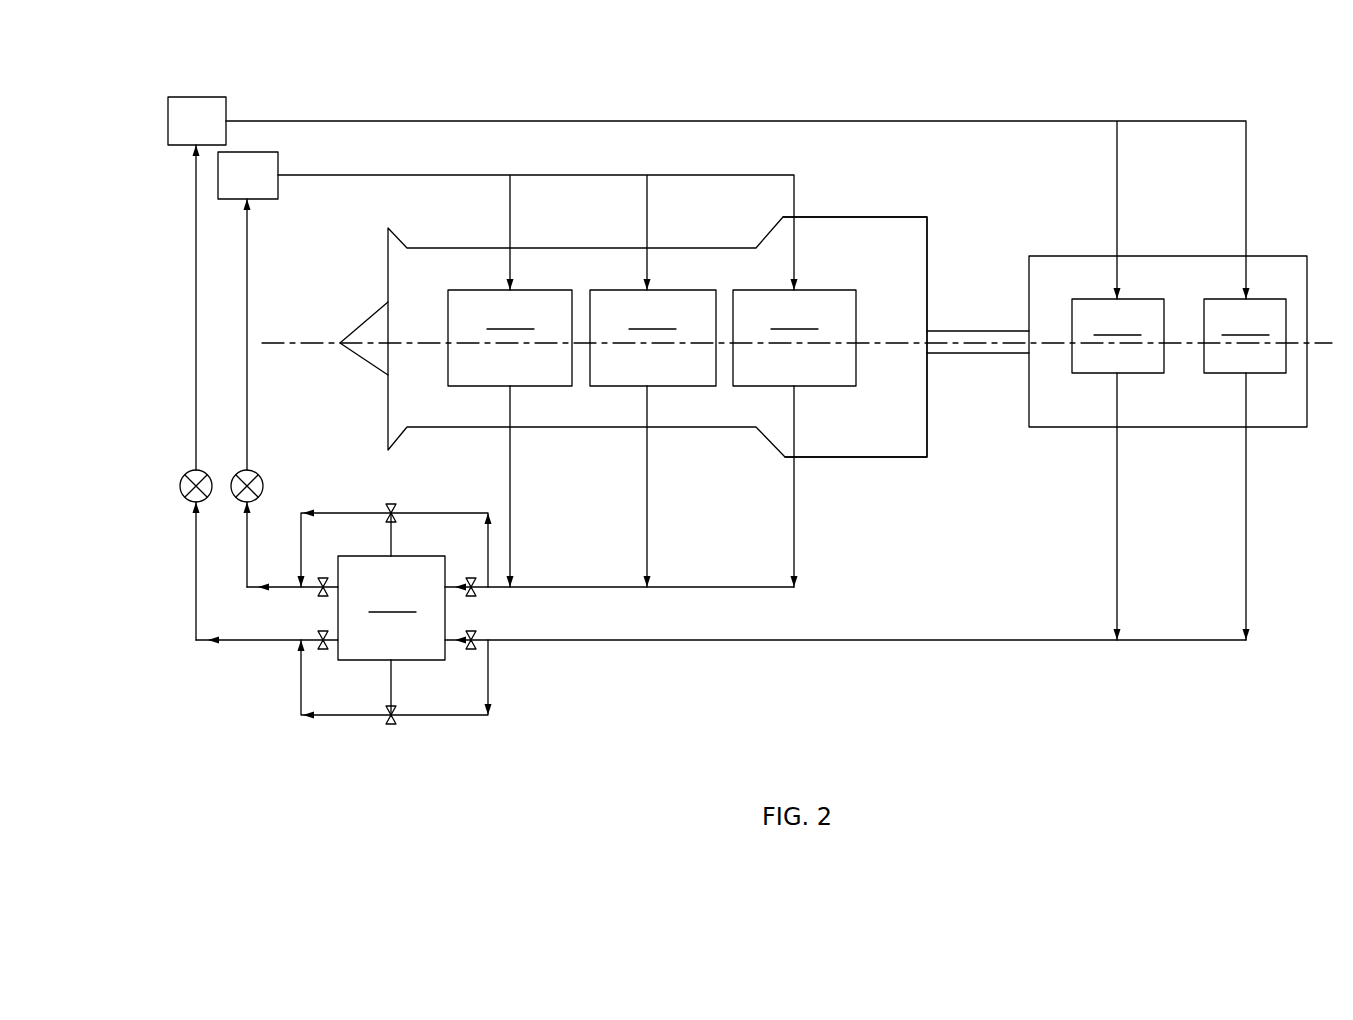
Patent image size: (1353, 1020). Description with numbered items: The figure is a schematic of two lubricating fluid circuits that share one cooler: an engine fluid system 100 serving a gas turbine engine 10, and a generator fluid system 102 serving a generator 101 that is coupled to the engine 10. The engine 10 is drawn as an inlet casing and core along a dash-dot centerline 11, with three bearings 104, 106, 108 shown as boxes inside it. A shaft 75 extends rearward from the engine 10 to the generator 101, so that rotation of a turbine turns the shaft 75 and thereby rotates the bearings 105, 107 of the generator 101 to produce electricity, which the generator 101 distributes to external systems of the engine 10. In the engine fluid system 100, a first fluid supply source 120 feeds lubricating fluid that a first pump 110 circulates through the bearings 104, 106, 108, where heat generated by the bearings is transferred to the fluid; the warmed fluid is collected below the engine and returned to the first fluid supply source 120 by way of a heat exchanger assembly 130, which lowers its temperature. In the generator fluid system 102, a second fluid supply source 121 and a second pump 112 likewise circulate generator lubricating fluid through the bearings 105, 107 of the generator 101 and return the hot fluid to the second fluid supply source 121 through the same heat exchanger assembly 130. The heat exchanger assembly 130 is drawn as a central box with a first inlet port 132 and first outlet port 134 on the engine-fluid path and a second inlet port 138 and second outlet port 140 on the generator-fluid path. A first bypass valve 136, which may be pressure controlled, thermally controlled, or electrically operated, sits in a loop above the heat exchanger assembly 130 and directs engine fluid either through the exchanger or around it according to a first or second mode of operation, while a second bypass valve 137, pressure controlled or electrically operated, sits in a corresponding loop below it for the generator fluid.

The gas turbine engine 10 is at (865, 200).
The centerline axis 11 is at (318, 343).
The shaft 75 is at (946, 338).
The engine fluid system 100 is at (846, 470).
The generator 101 is at (1149, 249).
The generator fluid system 102 is at (1264, 450).
The bearing 104 is at (510, 338).
The bearing 105 is at (1118, 336).
The bearing 106 is at (653, 338).
The bearing 107 is at (1245, 336).
The bearing 108 is at (794, 338).
The first pump 110 is at (259, 474).
The second pump 112 is at (186, 474).
The first fluid supply source 120 is at (250, 152).
The second fluid supply source 121 is at (197, 97).
The heat exchanger assembly 130 is at (395, 614).
The first inlet port 132 is at (471, 578).
The first outlet port 134 is at (323, 578).
The first bypass valve 136 is at (391, 504).
The second bypass valve 137 is at (391, 725).
The second inlet port 138 is at (471, 650).
The second outlet port 140 is at (323, 650).